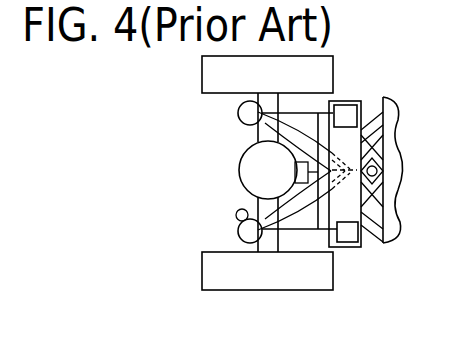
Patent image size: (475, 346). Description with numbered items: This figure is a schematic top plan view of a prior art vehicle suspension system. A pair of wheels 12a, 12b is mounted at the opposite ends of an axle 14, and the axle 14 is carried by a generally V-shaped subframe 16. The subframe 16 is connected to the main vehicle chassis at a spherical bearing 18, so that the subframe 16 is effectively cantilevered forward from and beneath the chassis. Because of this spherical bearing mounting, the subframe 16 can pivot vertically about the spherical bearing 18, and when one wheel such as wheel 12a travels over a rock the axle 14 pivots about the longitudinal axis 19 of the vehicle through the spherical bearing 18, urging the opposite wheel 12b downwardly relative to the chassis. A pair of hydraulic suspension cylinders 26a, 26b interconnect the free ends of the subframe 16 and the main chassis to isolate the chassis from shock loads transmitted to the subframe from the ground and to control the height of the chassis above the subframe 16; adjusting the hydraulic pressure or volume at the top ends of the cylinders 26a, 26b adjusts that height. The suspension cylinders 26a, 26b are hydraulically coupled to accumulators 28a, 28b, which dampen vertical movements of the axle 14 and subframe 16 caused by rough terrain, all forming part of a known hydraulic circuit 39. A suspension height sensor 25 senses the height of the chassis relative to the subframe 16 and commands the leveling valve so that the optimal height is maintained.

The wheel 12a is at (221, 259).
The wheel 12b is at (215, 80).
The axle 14 is at (238, 178).
The subframe 16 is at (304, 236).
The spherical bearing 18 is at (372, 192).
The longitudinal axis 19 is at (383, 148).
The suspension height sensor 25 is at (236, 212).
The hydraulic suspension cylinder 26a is at (237, 236).
The hydraulic suspension cylinder 26b is at (238, 112).
The accumulator 28a is at (347, 232).
The accumulator 28b is at (350, 108).
The hydraulic circuit 39 is at (300, 220).